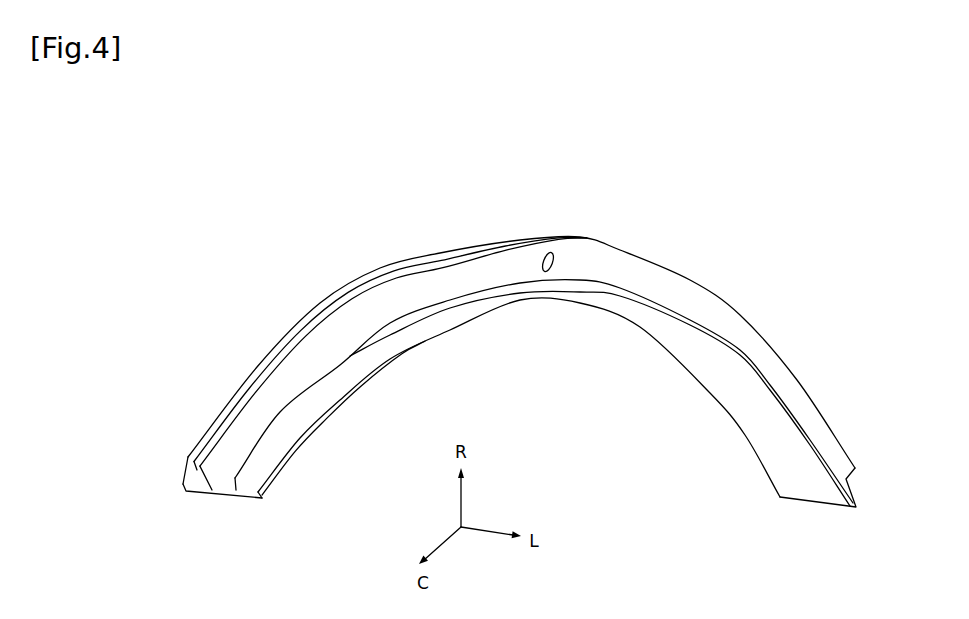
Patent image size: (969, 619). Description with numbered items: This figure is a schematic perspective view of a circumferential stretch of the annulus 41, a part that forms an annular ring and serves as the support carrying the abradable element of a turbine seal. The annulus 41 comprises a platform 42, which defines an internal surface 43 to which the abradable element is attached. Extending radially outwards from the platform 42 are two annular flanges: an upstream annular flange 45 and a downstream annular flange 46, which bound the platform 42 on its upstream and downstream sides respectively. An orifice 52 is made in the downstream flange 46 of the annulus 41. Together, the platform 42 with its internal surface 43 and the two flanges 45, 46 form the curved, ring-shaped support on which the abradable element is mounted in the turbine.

The annulus 41 is at (272, 323).
The platform 42 is at (190, 495).
The internal surface 43 is at (753, 425).
The upstream annular flange 45 is at (228, 400).
The downstream annular flange 46 is at (390, 302).
The orifice 52 is at (560, 259).